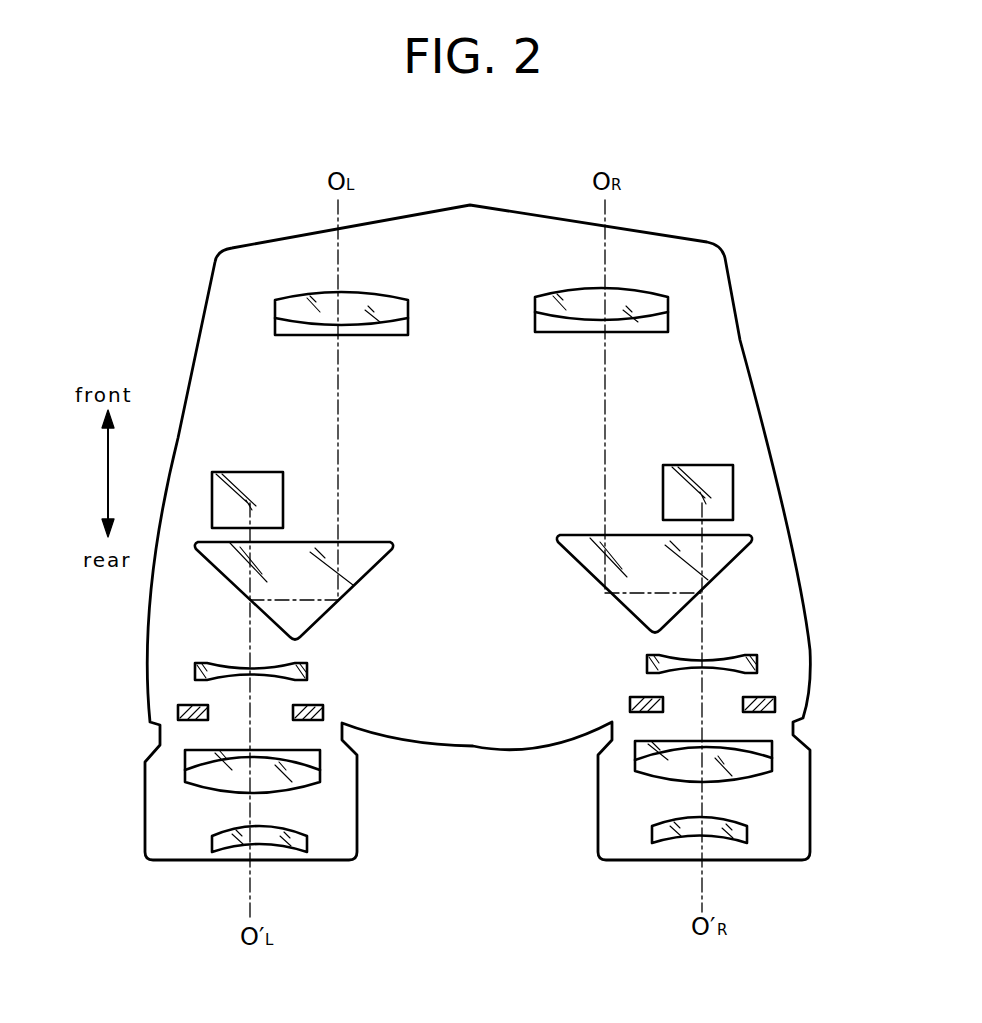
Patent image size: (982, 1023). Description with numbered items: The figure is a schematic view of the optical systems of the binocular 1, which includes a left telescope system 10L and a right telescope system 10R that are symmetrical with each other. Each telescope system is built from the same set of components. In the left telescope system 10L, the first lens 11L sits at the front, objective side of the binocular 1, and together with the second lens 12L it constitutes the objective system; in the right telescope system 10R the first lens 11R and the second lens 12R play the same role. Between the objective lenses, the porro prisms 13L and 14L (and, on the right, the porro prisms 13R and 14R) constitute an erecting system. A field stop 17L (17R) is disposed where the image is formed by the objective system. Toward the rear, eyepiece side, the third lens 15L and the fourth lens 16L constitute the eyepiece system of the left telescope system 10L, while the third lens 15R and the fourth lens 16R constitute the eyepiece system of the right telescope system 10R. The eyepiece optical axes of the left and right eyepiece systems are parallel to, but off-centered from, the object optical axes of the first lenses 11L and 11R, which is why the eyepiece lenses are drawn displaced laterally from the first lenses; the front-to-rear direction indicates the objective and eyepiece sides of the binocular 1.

The binocular 1 is at (663, 197).
The left telescope system 10L is at (178, 323).
The right telescope system 10R is at (838, 305).
The first lens 11L is at (303, 322).
The first lens 11R is at (633, 315).
The second lens 12L is at (307, 672).
The second lens 12R is at (647, 665).
The porro prism 13L is at (232, 572).
The porro prism 13R is at (713, 568).
The porro prism 14L is at (258, 446).
The porro prism 14R is at (700, 443).
The third lens 15L is at (190, 768).
The third lens 15R is at (758, 762).
The fourth lens 16L is at (226, 846).
The fourth lens 16R is at (727, 838).
The field stop 17L is at (178, 709).
The field stop 17R is at (775, 703).